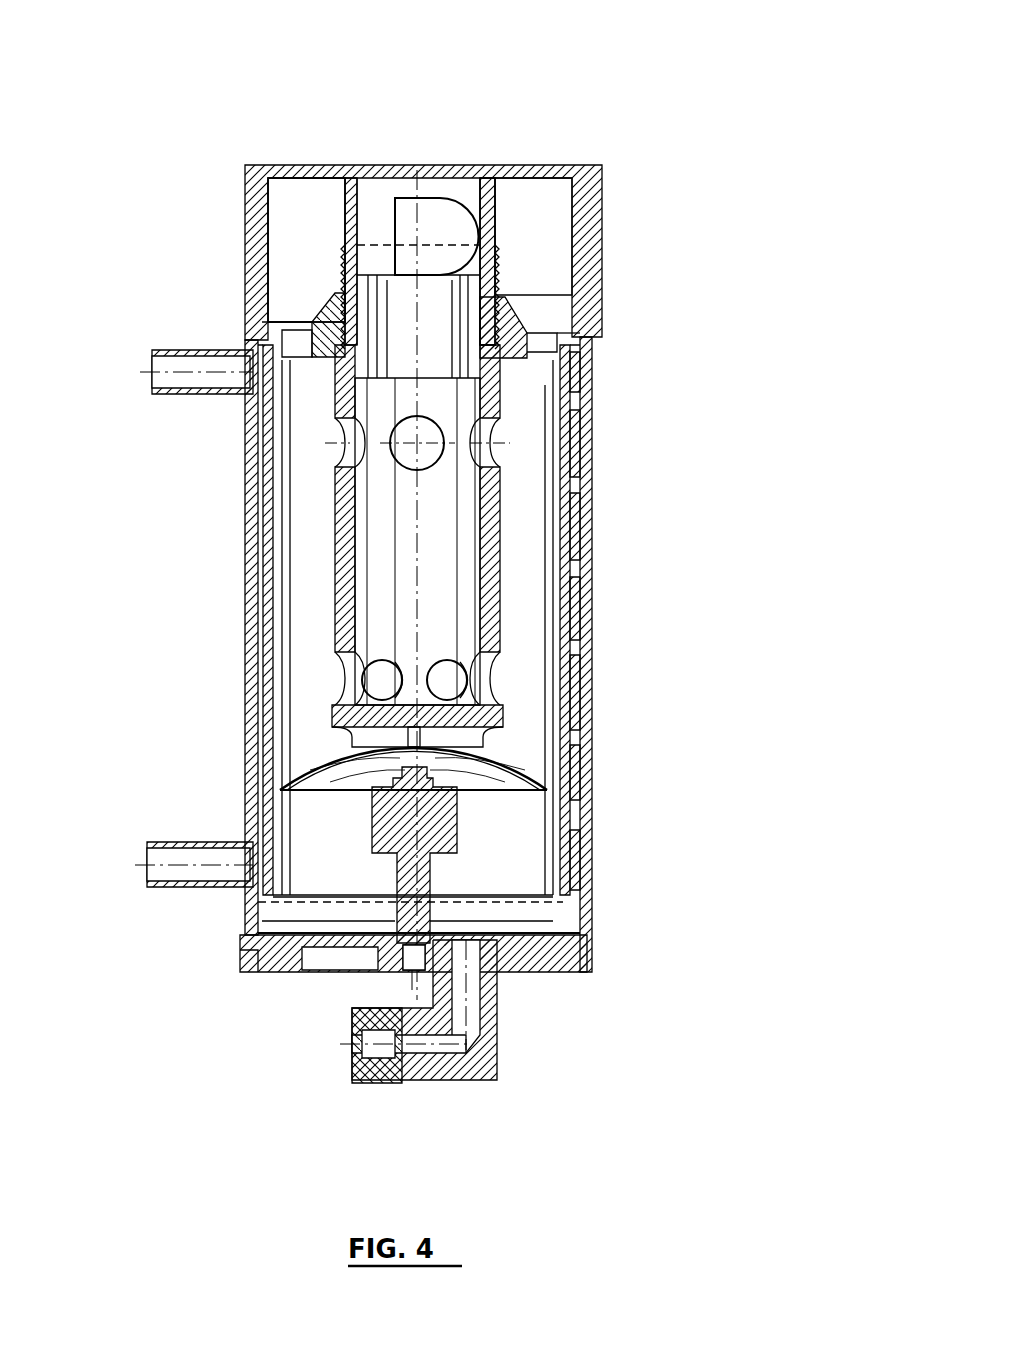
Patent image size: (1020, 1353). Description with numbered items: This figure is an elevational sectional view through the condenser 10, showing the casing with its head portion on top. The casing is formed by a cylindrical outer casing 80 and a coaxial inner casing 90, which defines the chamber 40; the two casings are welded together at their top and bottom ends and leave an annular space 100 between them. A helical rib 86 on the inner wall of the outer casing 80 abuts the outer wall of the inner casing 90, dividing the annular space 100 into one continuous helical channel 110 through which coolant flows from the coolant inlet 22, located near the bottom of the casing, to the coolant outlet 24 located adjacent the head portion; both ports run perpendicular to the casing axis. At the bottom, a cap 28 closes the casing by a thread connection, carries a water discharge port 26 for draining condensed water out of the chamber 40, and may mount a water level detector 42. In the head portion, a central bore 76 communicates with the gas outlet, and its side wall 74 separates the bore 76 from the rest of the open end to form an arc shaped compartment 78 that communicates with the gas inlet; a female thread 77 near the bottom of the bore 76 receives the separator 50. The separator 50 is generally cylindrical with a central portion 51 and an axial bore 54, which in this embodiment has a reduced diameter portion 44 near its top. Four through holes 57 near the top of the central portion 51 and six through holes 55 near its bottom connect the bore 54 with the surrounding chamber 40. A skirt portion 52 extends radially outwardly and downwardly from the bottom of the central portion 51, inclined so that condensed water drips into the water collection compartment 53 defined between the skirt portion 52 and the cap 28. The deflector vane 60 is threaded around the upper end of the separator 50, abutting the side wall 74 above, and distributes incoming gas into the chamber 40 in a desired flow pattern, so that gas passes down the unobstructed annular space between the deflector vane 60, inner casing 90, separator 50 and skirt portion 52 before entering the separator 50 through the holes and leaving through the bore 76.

The condenser 10 is at (738, 50).
The coolant inlet 22 is at (150, 872).
The coolant outlet 24 is at (162, 362).
The water discharge port 26 is at (427, 1050).
The cap 28 is at (276, 957).
The chamber 40 is at (527, 462).
The water level detector 42 is at (387, 828).
The reduced diameter portion 44 is at (392, 308).
The separator 50 is at (580, 398).
The central portion 51 is at (330, 553).
The skirt portion 52 is at (312, 768).
The water collection compartment 53 is at (532, 862).
The bore 54 is at (373, 512).
The through holes 55 is at (348, 672).
The through holes 57 is at (340, 447).
The deflector vane 60 is at (530, 322).
The side wall 74 is at (488, 205).
The bore 76 is at (372, 185).
The female thread 77 is at (497, 277).
The arc shaped compartment 78 is at (295, 190).
The outer casing 80 is at (582, 790).
The rib 86 is at (580, 660).
The inner casing 90 is at (575, 548).
The annular space 100 is at (580, 710).
The helical channel 110 is at (577, 605).